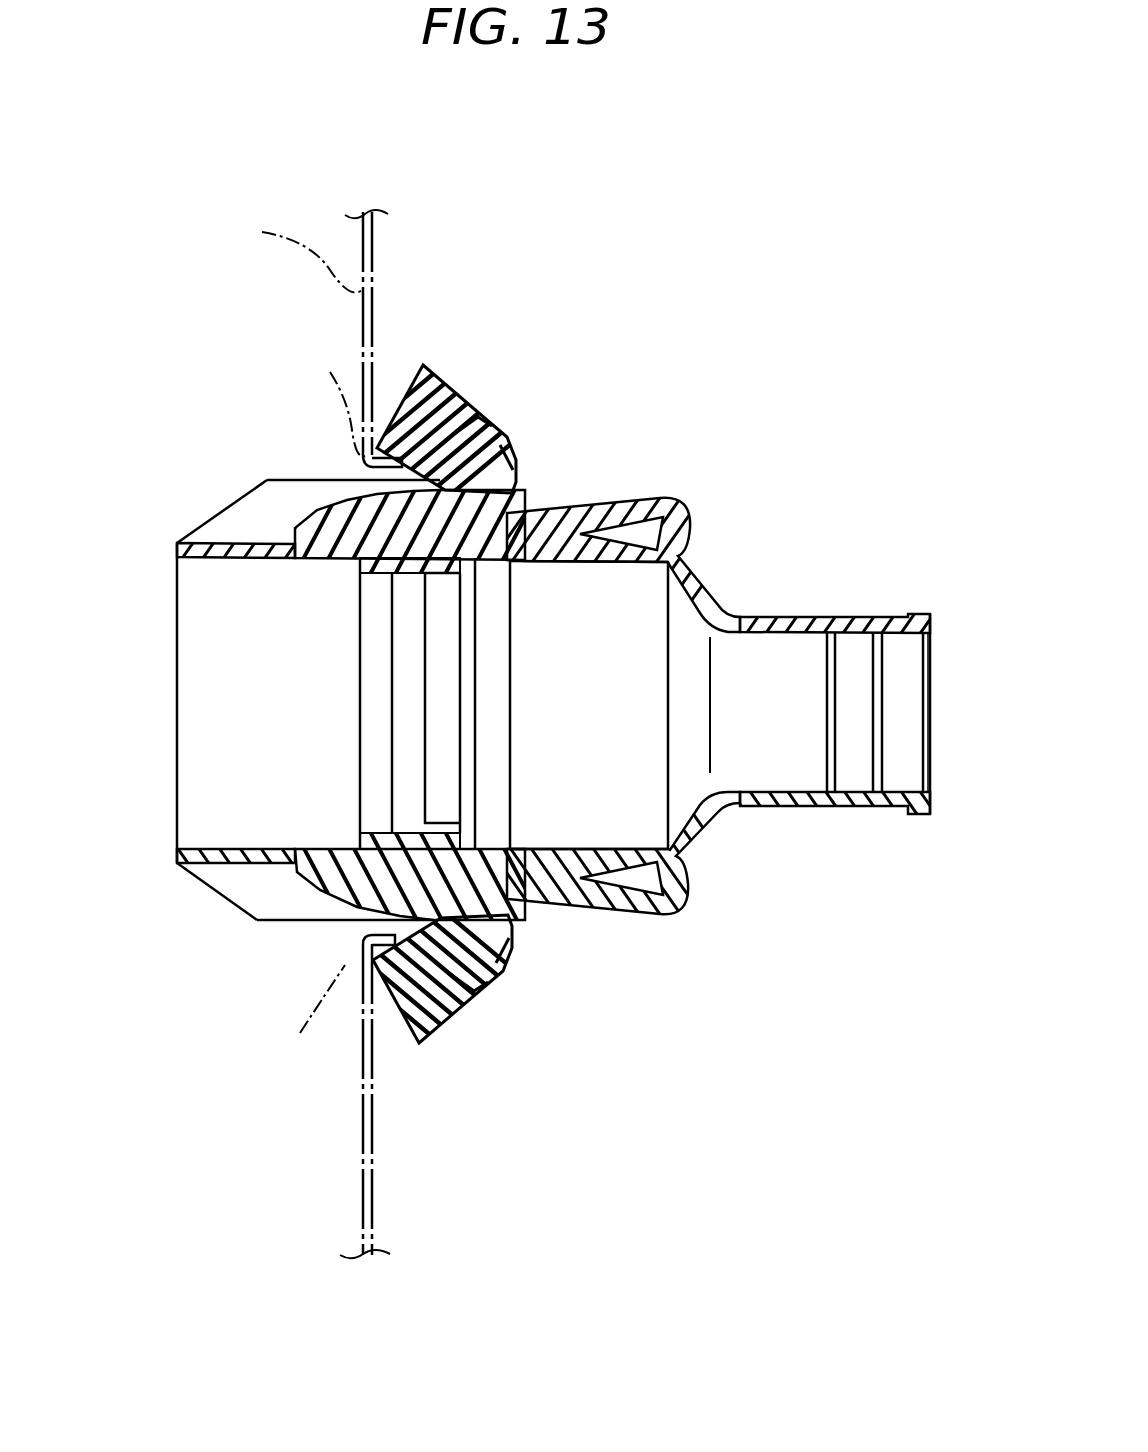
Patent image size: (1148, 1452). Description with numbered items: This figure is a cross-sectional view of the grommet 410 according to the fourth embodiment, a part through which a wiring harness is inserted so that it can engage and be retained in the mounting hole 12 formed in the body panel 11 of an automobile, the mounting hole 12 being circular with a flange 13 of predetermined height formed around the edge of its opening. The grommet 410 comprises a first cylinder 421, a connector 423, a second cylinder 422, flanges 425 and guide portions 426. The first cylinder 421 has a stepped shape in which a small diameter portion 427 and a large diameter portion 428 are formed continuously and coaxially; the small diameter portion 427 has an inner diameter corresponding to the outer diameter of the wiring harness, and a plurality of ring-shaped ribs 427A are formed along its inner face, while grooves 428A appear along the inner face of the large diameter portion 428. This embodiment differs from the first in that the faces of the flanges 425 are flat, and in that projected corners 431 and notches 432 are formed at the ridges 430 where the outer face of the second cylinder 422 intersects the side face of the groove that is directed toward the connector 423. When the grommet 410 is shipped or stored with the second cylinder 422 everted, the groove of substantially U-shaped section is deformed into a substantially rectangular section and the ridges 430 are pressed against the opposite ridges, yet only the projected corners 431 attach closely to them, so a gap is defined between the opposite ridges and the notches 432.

The grommet 410 is at (738, 304).
The first cylinder 421 is at (268, 543).
The second cylinder 422 is at (392, 375).
The connector 423 is at (693, 513).
The flange 425 is at (323, 517).
The guide portion 426 is at (240, 513).
The small diameter portion 427 is at (855, 620).
The ring-shaped ribs 427A is at (923, 697).
The large diameter portion 428 is at (262, 866).
The inner grooves 428A is at (487, 713).
The ridge 430 is at (448, 462).
The projected corner 431 is at (520, 493).
The notch 432 is at (500, 425).
The body panel 11 is at (292, 254).
The mounting hole 12 is at (303, 1014).
The flange 13 is at (335, 394).